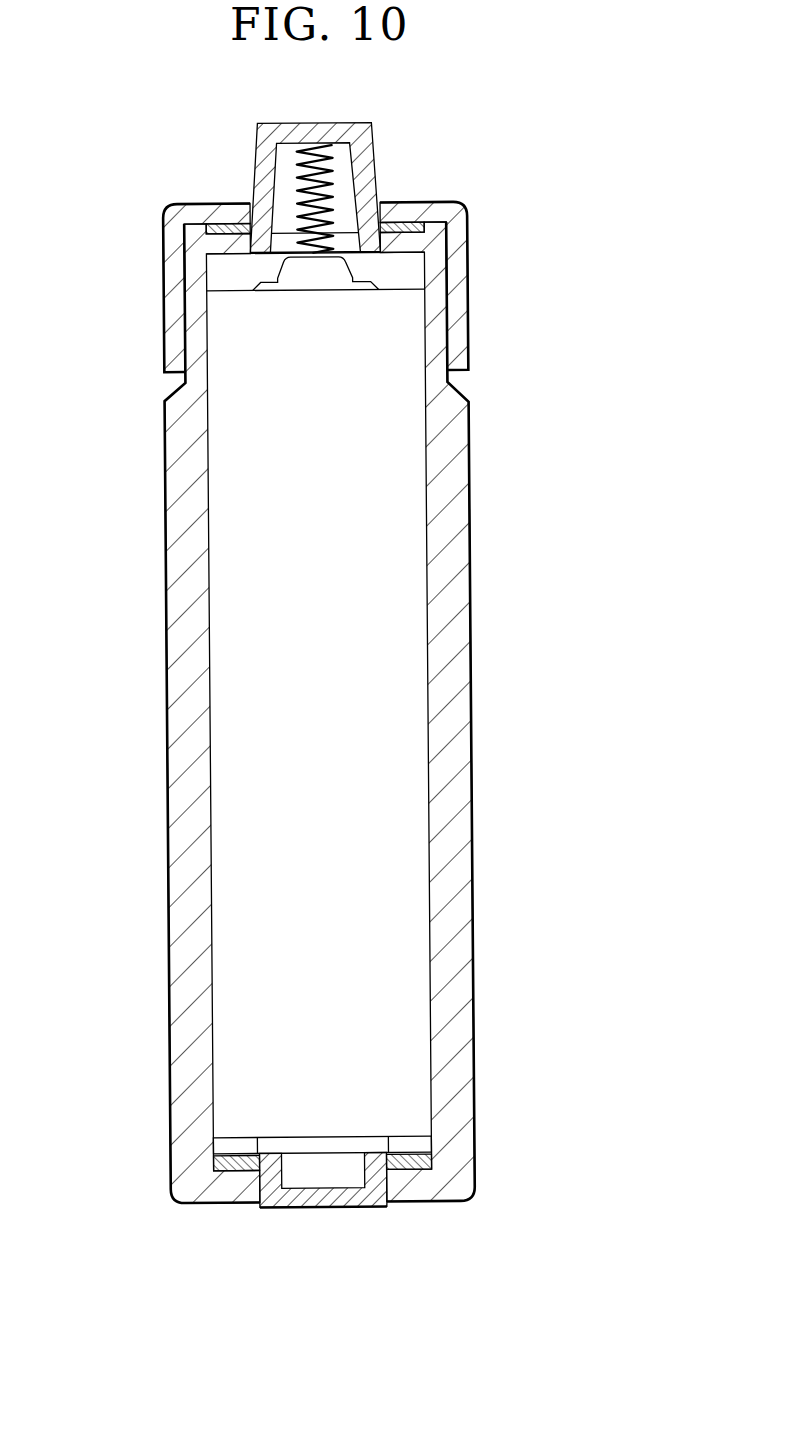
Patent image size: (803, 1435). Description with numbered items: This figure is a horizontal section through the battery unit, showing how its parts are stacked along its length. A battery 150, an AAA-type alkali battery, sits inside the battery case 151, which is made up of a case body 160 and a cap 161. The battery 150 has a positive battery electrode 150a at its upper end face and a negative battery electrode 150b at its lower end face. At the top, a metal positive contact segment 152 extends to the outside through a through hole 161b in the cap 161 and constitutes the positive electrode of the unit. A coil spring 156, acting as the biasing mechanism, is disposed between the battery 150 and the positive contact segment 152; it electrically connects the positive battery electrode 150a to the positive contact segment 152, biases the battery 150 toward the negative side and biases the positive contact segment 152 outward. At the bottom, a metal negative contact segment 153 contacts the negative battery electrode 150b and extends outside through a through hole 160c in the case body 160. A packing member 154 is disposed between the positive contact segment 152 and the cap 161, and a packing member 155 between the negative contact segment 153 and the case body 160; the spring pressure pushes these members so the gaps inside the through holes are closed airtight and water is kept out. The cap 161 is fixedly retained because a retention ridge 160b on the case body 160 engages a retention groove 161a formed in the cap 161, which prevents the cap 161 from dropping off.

The battery 150 is at (377, 756).
The positive battery electrode 150a is at (313, 273).
The negative battery electrode 150b is at (324, 1147).
The battery case 151 is at (607, 294).
The positive contact segment 152 is at (257, 153).
The negative contact segment 153 is at (269, 1207).
The packing member 154 is at (180, 211).
The packing member 155 is at (227, 1203).
The coil spring 156 is at (334, 163).
The case body 160 is at (495, 466).
The retention ridge 160b is at (182, 238).
The through hole 160c is at (364, 1207).
The cap 161 is at (495, 315).
The retention groove 161a is at (467, 263).
The through hole 161b is at (254, 206).